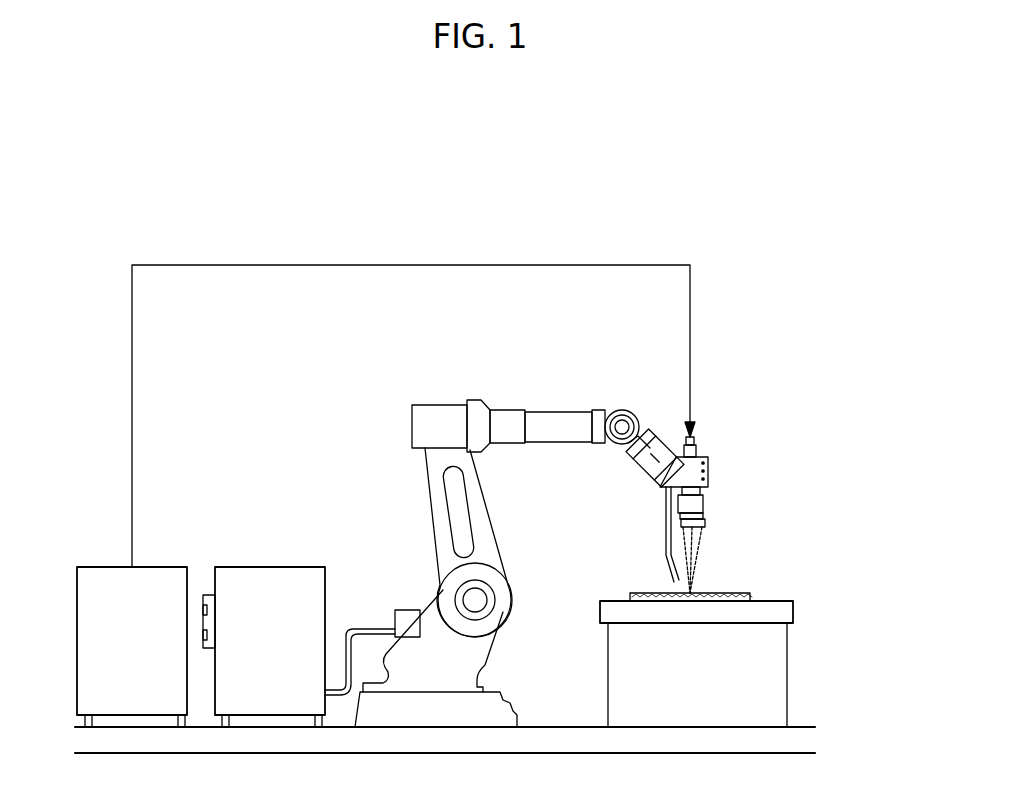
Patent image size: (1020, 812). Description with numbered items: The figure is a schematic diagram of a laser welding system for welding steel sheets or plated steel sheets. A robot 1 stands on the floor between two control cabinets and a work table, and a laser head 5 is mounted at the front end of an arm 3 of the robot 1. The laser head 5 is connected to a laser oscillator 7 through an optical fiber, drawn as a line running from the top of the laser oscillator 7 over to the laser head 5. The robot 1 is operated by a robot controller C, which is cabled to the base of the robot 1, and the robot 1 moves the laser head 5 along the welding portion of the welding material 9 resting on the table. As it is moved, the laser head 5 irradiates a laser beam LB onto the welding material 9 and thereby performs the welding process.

The robot 1 is at (509, 542).
The arm 3 is at (568, 412).
The laser head 5 is at (706, 511).
The laser oscillator 7 is at (170, 566).
The welding material 9 is at (656, 592).
The robot controller C is at (295, 566).
The laser beam LB is at (704, 546).